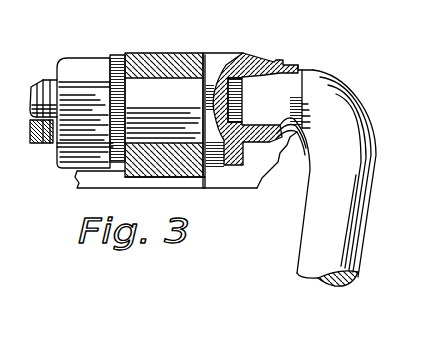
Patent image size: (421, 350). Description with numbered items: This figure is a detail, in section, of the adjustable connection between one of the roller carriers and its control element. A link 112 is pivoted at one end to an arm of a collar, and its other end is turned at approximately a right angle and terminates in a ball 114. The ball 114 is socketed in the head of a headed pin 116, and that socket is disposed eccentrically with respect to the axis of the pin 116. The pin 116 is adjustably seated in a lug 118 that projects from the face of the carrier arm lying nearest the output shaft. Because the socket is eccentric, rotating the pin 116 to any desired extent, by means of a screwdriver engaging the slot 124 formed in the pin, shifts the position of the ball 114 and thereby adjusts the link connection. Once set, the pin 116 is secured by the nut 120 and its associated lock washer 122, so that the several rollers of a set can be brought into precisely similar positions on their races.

The link 112 is at (318, 198).
The ball 114 is at (270, 78).
The headed pin 116 is at (168, 93).
The lug 118 is at (193, 63).
The nut 120 is at (75, 65).
The lock washer 122 is at (109, 82).
The slot 124 is at (34, 117).